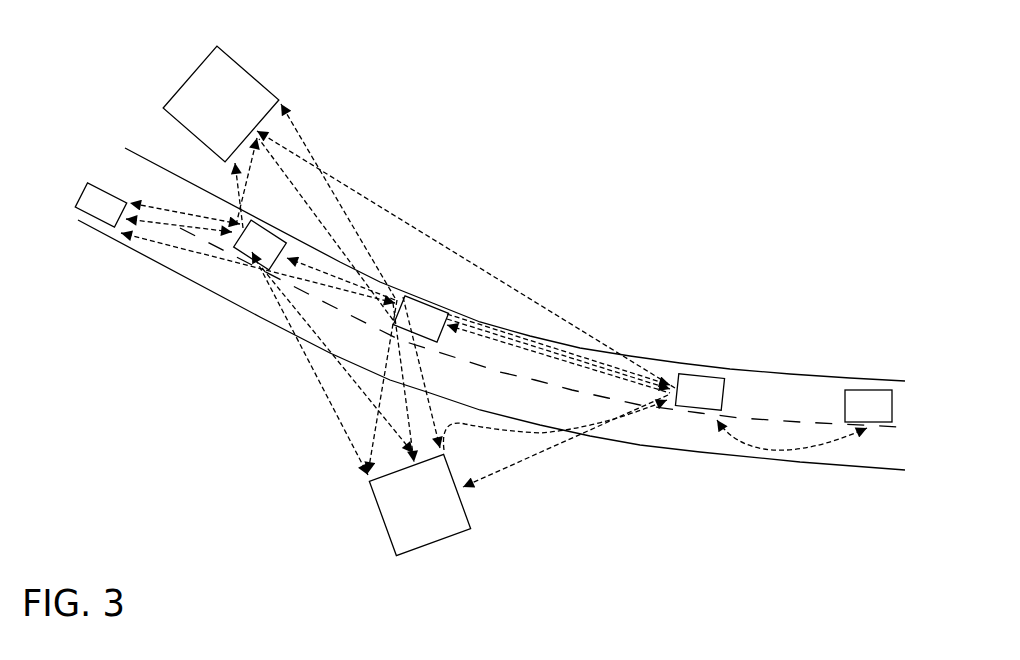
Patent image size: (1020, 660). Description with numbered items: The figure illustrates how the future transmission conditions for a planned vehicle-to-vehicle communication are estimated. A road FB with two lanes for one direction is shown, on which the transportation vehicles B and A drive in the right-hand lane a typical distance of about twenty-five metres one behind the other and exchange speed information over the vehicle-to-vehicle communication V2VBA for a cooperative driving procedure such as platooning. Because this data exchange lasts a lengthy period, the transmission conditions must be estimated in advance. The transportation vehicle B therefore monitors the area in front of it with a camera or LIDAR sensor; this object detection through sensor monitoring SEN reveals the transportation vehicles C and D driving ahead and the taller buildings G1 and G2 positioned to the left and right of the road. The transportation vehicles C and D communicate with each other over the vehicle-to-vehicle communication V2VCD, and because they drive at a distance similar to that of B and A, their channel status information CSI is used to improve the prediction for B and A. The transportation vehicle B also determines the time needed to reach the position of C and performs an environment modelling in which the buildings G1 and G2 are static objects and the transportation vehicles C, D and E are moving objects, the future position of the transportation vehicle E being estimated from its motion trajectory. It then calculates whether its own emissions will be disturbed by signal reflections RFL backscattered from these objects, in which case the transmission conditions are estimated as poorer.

The transportation vehicle A is at (868, 398).
The transportation vehicle B is at (702, 387).
The transportation vehicle C is at (430, 317).
The transportation vehicle D is at (262, 240).
The transportation vehicle E is at (92, 183).
The building G1 is at (380, 517).
The building G2 is at (242, 68).
The road FB is at (667, 452).
The signal reflection RFL is at (272, 122).
The object detection through sensor monitoring SEN is at (447, 248).
The CSI communication CSI is at (457, 423).
The vehicle-to-vehicle communication V2VCD is at (378, 268).
The vehicle-to-vehicle communication V2VBA is at (818, 449).